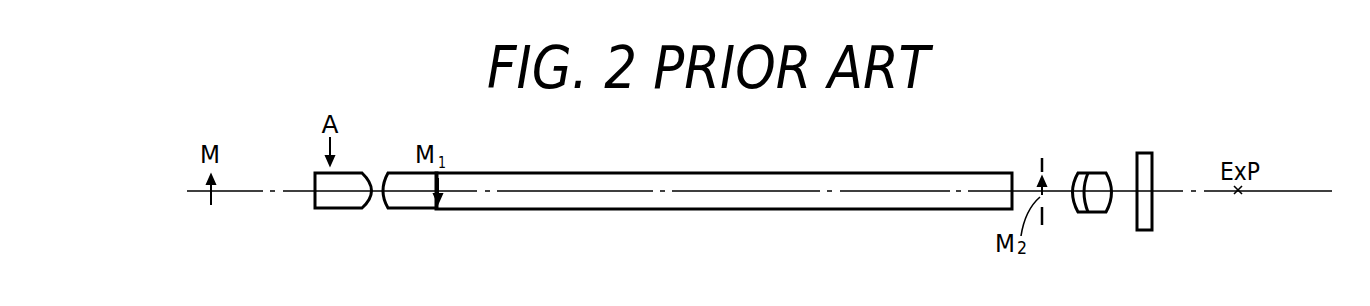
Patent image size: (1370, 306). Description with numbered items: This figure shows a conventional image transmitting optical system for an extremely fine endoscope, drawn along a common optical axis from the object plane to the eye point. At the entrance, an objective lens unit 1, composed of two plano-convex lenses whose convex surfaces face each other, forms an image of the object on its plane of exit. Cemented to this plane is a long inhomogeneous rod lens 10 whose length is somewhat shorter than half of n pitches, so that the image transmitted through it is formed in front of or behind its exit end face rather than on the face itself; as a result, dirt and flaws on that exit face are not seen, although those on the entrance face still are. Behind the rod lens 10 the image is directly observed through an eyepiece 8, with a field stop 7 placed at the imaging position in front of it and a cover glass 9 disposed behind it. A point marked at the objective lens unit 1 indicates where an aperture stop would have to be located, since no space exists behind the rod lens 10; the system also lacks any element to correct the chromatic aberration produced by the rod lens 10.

The objective lens unit 1 is at (312, 225).
The inhomogeneous rod lens 10 is at (968, 225).
The field stop 7 is at (1044, 166).
The eyepiece 8 is at (1093, 173).
The cover glass 9 is at (1147, 153).